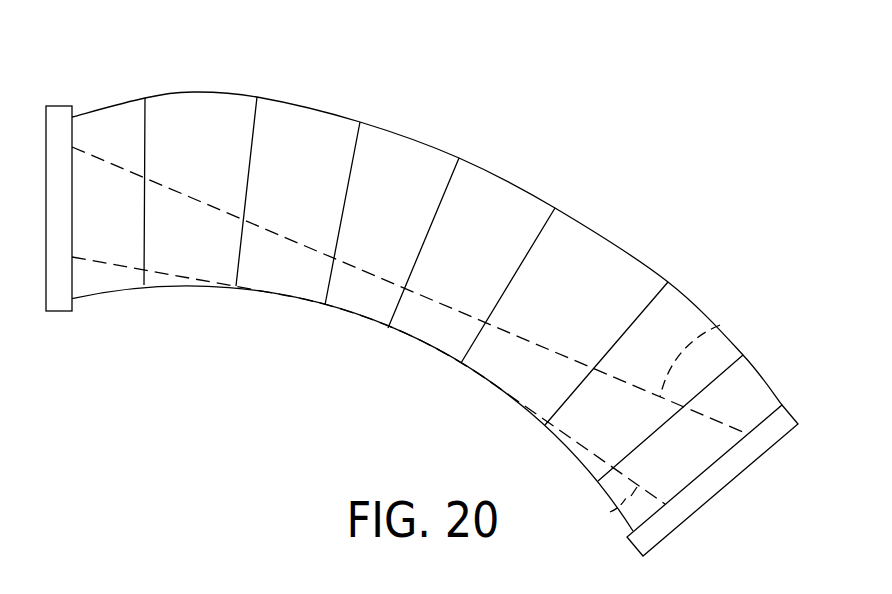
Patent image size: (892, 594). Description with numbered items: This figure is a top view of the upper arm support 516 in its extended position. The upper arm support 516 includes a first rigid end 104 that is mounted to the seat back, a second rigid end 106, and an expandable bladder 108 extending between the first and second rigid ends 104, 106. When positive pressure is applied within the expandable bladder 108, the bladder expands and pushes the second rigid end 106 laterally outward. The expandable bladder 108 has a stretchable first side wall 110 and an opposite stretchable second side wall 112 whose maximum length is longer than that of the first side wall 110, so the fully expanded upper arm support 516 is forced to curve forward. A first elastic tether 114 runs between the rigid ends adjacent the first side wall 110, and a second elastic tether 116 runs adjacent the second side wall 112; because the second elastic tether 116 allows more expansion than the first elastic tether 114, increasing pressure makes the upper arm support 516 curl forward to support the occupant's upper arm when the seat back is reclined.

The first rigid end 104 is at (60, 113).
The second rigid end 106 is at (717, 482).
The expandable bladder 108 is at (420, 117).
The first side wall 110 is at (103, 296).
The second side wall 112 is at (527, 188).
The first elastic tether 114 is at (608, 510).
The second elastic tether 116 is at (725, 322).
The upper arm support 516 is at (295, 393).